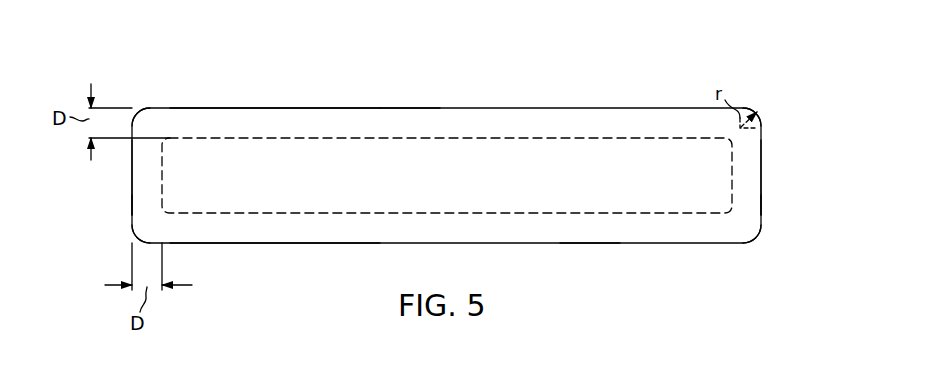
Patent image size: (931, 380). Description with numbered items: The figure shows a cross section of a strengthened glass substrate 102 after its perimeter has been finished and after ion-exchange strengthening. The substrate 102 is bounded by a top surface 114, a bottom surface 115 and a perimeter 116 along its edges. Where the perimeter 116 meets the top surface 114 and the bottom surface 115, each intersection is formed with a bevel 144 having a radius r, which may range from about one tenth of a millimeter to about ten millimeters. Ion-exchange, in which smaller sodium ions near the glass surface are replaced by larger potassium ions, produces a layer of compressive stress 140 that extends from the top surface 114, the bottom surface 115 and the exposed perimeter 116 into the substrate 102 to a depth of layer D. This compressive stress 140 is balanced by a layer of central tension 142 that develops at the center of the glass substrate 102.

The glass substrate 102 is at (446, 137).
The top surface 114 is at (276, 108).
The bottom surface 115 is at (268, 243).
The perimeter 116 is at (132, 173).
The layer of compressive stress 140 is at (406, 117).
The layer of central tension 142 is at (540, 152).
The bevel 144 is at (442, 177).